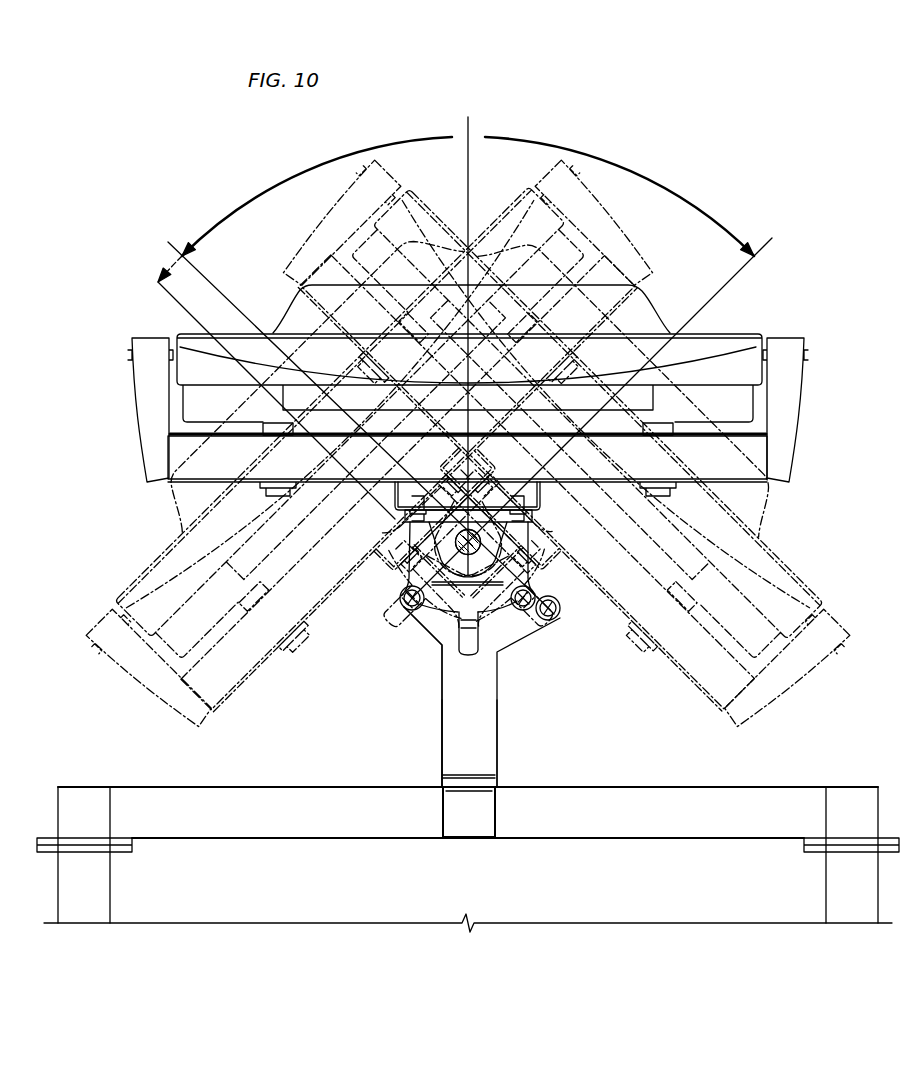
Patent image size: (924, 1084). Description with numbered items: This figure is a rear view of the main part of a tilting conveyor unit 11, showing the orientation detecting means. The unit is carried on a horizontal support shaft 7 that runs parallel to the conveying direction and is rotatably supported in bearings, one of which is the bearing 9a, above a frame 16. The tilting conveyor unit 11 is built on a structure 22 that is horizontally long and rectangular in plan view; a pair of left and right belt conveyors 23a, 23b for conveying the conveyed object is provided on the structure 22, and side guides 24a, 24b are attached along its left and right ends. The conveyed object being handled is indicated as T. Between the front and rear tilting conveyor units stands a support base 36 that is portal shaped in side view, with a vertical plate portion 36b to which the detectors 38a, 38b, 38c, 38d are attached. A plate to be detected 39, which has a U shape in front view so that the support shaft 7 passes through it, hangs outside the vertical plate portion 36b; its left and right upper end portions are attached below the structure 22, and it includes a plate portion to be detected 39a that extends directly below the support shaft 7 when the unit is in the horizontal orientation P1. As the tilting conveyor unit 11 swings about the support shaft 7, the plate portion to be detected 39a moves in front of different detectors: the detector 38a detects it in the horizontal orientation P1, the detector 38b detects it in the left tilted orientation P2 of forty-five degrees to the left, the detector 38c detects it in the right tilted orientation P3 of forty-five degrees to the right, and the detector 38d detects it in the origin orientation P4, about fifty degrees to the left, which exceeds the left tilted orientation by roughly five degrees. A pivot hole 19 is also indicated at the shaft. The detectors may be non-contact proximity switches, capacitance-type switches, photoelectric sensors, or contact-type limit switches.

The support shaft 7 is at (482, 540).
The bearing 9a is at (480, 513).
The tilting conveyor unit 11 is at (228, 626).
The frame 16 is at (405, 830).
The pivot hole 19 is at (453, 541).
The structure 22 is at (215, 457).
The belt conveyor 23a is at (275, 423).
The belt conveyor 23b is at (664, 423).
The side guide 24a is at (150, 405).
The side guide 24b is at (790, 412).
The support base 36 is at (545, 555).
The vertical plate portion 36b is at (460, 716).
The detector 38a is at (418, 640).
The detector 38b is at (521, 612).
The detector 38c is at (402, 592).
The detector 38d is at (557, 617).
The plate to be detected 39 is at (423, 563).
The plate portion to be detected 39a is at (385, 625).
The tray T is at (640, 318).
The horizontal orientation P1 is at (467, 332).
The left tilted orientation P2 is at (345, 368).
The right tilted orientation P3 is at (600, 367).
The origin orientation P4 is at (260, 384).